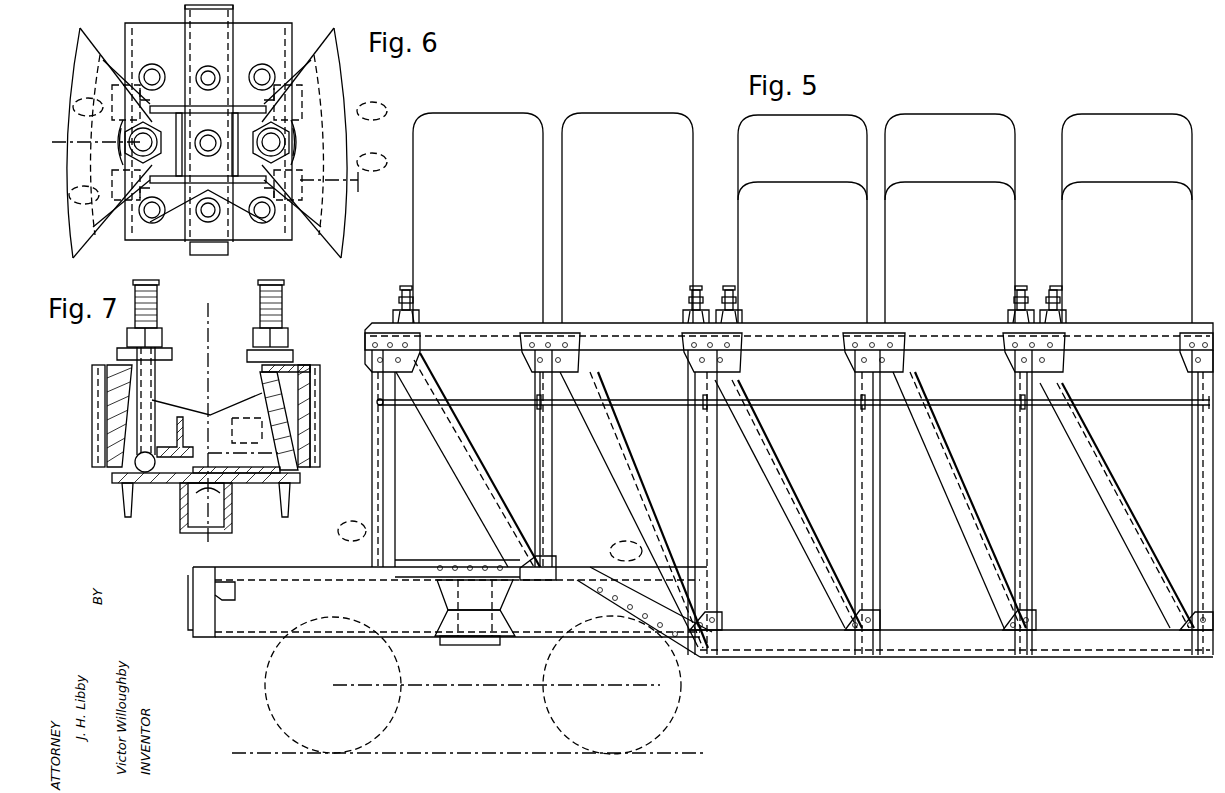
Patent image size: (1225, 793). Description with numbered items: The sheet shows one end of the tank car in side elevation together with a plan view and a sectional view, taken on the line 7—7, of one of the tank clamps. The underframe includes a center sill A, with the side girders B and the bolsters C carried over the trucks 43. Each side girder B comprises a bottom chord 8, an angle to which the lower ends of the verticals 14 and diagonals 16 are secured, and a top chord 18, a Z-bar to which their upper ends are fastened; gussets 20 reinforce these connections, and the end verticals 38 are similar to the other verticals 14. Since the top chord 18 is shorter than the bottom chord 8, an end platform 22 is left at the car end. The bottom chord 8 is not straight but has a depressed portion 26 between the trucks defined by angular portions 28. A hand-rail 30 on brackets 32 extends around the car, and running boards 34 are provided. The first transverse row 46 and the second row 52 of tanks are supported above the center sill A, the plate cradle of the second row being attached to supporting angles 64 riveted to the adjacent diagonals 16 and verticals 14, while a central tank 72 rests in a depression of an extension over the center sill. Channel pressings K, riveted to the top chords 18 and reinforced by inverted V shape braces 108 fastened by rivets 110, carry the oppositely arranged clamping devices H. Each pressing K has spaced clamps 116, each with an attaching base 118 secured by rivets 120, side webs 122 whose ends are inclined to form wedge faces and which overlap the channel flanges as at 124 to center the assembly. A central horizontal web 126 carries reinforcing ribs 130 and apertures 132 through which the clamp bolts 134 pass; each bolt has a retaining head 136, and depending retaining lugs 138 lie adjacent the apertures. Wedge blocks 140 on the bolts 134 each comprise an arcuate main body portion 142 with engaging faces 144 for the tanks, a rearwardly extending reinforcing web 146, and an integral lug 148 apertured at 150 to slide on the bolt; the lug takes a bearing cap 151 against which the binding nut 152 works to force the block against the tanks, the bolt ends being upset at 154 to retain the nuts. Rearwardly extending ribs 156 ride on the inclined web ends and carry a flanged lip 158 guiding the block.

In FIG. 5, the first transverse row of tanks 46 is at (478, 218).
In FIG. 5, the row of tanks 52 is at (627, 218).
In FIG. 5, the central tank 72 is at (965, 218).
In FIG. 5, the top chord 18 is at (795, 333).
In FIG. 5, the gussets 20 is at (520, 355).
In FIG. 5, the verticals 14 is at (552, 498).
In FIG. 5, the diagonals 16 is at (470, 460).
In FIG. 5, the hand-rail 30 is at (482, 400).
In FIG. 5, the brackets 32 is at (537, 406).
In FIG. 5, the depressed portion 26 is at (820, 657).
In FIG. 5, the angular portions 28 is at (612, 600).
In FIG. 5, the supporting angles 64 is at (650, 592).
In FIG. 5, the center sill A is at (265, 627).
In FIG. 5, the running boards 34 is at (270, 567).
In FIG. 5, the end platform 22 is at (350, 567).
In FIG. 5, the end verticals 38 is at (372, 470).
In FIG. 5, the bottom chord 8 is at (335, 567).
In FIG. 7, the bottom chord 8 is at (206, 425).
In FIG. 5, the side girders B is at (770, 445).
In FIG. 5, the bolsters C is at (475, 625).
In FIG. 5, the trucks 43 is at (505, 690).
In FIG. 5, the clamps 116 is at (398, 322).
In FIG. 6, the clamps 116 is at (200, 68).
In FIG. 5, the clamp bolts 134 is at (412, 293).
In FIG. 6, the clamp bolts 134 is at (135, 141).
In FIG. 7, the clamp bolts 134 is at (157, 302).
In FIG. 5, the clamping devices H is at (419, 312).
In FIG. 5, the wedge blocks 140 is at (419, 320).
In FIG. 6, the wedge blocks 140 is at (115, 92).
In FIG. 7, the wedge blocks 140 is at (95, 462).
In FIG. 6, the rivets 110 is at (209, 80).
In FIG. 7, the rivets 110 is at (208, 493).
In FIG. 6, the rivets 120 is at (152, 68).
In FIG. 6, the reinforcing ribs 130 is at (208, 132).
In FIG. 7, the reinforcing ribs 130 is at (155, 425).
In FIG. 6, the binding nut 152 is at (125, 150).
In FIG. 7, the binding nut 152 is at (208, 335).
In FIG. 6, the bearing cap 151 is at (130, 160).
In FIG. 7, the bearing cap 151 is at (125, 352).
In FIG. 6, the ribs 156 is at (125, 112).
In FIG. 6, the lip 158 is at (207, 136).
In FIG. 7, the lip 158 is at (262, 395).
In FIG. 6, the attaching base 118 is at (236, 100).
In FIG. 7, the attaching base 118 is at (252, 483).
In FIG. 6, the central horizontal web 126 is at (180, 104).
In FIG. 7, the central horizontal web 126 is at (185, 445).
In FIG. 6, the side webs 122 is at (240, 104).
In FIG. 7, the side webs 122 is at (236, 442).
In FIG. 6, the reinforcing web 146 is at (295, 90).
In FIG. 6, the main body portion 142 is at (305, 108).
In FIG. 7, the main body portion 142 is at (107, 405).
In FIG. 6, the engaging faces 144 is at (305, 125).
In FIG. 7, the engaging faces 144 is at (92, 436).
In FIG. 6, the upset ends 154 is at (150, 240).
In FIG. 6, the channel pressings K is at (140, 28).
In FIG. 7, the channel pressings K is at (125, 512).
In FIG. 6, the section line 7 is at (215, 170).
In FIG. 7, the aperture 150 is at (117, 356).
In FIG. 7, the lug 148 is at (100, 370).
In FIG. 7, the overlapping portions 124 is at (118, 485).
In FIG. 7, the inverted V shape braces 108 is at (180, 520).
In FIG. 7, the apertures 132 is at (155, 440).
In FIG. 7, the retaining lugs 138 is at (147, 472).
In FIG. 7, the retaining head 136 is at (140, 483).